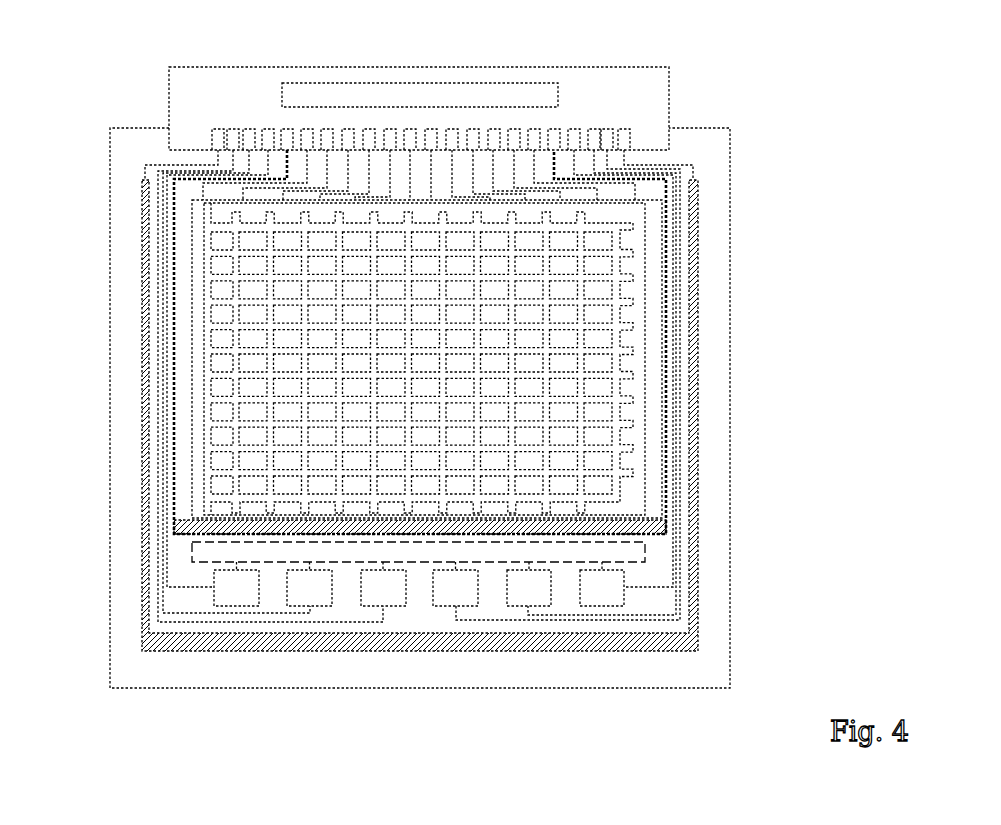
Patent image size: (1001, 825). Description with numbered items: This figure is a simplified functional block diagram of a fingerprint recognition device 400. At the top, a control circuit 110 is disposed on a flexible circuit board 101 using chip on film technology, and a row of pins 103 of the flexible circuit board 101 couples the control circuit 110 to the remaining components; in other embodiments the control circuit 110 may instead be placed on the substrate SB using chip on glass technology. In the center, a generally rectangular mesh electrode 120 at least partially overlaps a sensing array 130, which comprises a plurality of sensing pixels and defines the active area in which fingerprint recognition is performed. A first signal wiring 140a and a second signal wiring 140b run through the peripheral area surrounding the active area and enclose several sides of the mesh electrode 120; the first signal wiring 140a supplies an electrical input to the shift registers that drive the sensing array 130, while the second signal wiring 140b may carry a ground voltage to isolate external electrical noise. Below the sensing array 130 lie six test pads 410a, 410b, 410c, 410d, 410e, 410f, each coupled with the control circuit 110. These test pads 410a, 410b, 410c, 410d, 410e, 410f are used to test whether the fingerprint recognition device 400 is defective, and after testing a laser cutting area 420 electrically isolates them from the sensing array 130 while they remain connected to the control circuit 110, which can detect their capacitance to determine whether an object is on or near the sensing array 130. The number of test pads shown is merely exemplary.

The fingerprint recognition device 400 is at (42, 53).
The flexible circuit board 101 is at (169, 88).
The pins 103 is at (286, 128).
The control circuit 110 is at (302, 83).
The mesh electrode 120 is at (632, 270).
The sensing array 130 is at (647, 233).
The first signal wiring 140a is at (150, 208).
The second signal wiring 140b is at (142, 238).
The substrate SB is at (736, 325).
The laser cutting area 420 is at (647, 545).
The test pad 410a is at (236, 606).
The test pad 410b is at (319, 606).
The test pad 410c is at (388, 606).
The test pad 410d is at (441, 606).
The test pad 410e is at (514, 606).
The test pad 410f is at (598, 606).